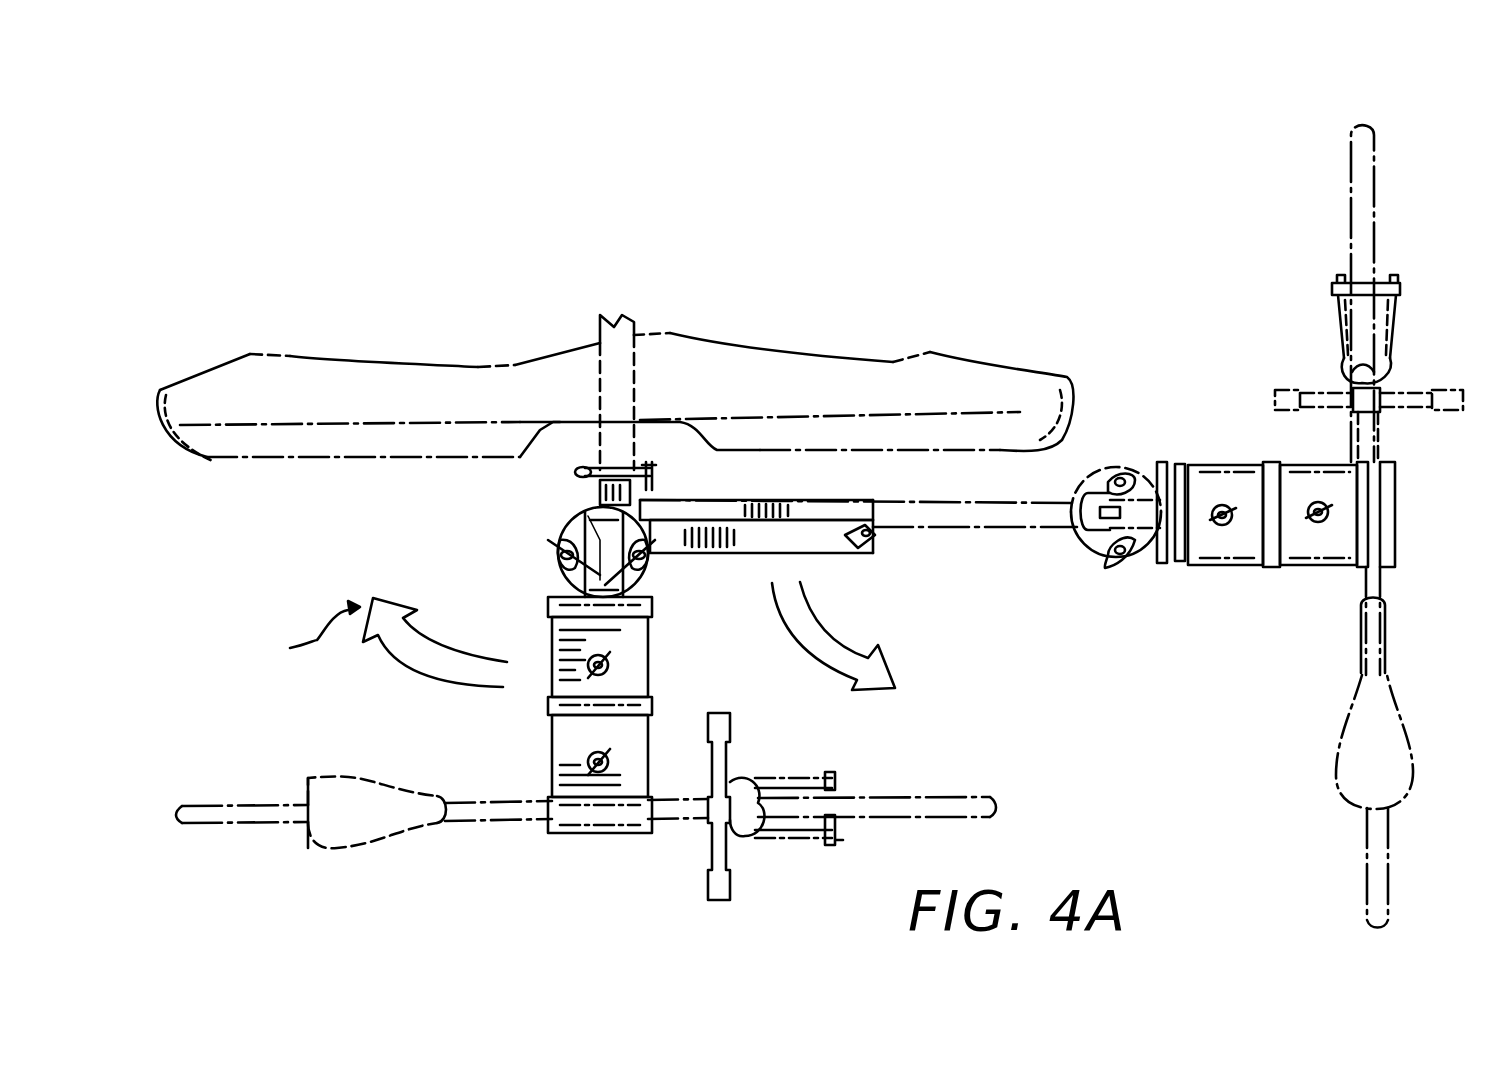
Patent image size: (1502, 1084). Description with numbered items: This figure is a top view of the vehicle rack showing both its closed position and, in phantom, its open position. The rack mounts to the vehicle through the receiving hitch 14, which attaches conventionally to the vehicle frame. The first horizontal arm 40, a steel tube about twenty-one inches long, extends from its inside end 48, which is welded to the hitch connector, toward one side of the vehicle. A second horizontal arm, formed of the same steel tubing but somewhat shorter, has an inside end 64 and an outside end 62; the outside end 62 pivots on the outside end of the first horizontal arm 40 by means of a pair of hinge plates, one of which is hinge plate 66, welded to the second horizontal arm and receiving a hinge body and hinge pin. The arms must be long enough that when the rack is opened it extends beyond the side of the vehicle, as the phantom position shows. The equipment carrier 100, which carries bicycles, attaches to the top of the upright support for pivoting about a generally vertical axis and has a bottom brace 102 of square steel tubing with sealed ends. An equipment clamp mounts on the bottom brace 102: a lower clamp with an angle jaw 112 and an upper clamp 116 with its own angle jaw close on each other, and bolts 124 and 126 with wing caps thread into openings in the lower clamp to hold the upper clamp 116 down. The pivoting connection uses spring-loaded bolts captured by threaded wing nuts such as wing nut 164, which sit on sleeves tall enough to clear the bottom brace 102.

The receiving hitch 14 is at (600, 452).
The inside end of the first horizontal arm 48 is at (645, 493).
The bottom brace 102 is at (580, 528).
The wing nut 164 is at (560, 557).
The first horizontal arm 40 is at (765, 500).
The inside end of the second horizontal arm 64 is at (670, 560).
The outside end of the second horizontal arm 62 is at (828, 567).
The hinge plate 66 is at (875, 537).
The equipment carrier 100 is at (294, 632).
The angle jaw 112 is at (663, 712).
The bolt 124 is at (617, 652).
The bolt 126 is at (590, 743).
The upper clamp 116 is at (590, 837).